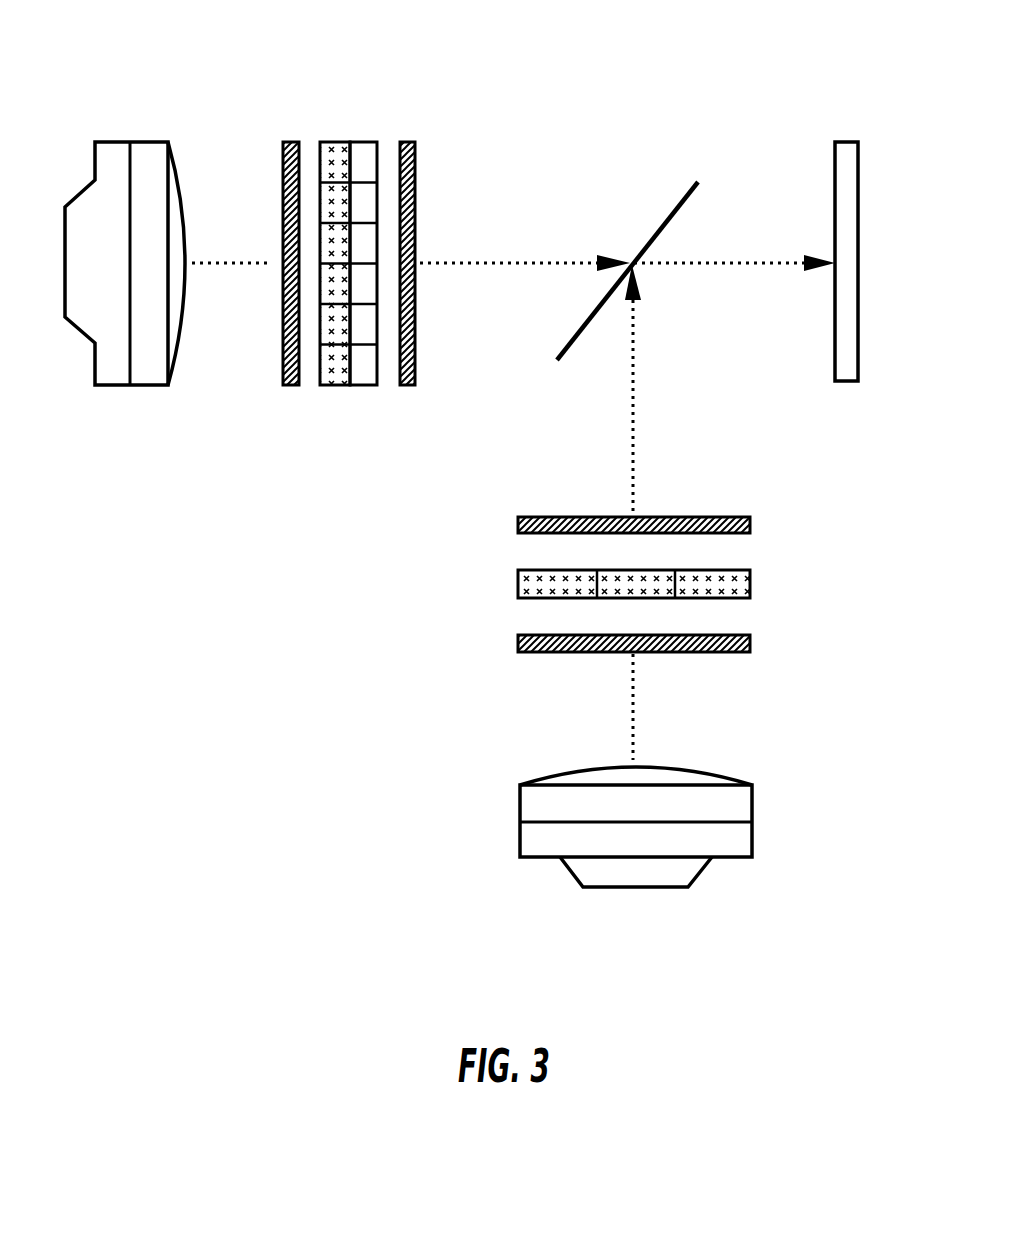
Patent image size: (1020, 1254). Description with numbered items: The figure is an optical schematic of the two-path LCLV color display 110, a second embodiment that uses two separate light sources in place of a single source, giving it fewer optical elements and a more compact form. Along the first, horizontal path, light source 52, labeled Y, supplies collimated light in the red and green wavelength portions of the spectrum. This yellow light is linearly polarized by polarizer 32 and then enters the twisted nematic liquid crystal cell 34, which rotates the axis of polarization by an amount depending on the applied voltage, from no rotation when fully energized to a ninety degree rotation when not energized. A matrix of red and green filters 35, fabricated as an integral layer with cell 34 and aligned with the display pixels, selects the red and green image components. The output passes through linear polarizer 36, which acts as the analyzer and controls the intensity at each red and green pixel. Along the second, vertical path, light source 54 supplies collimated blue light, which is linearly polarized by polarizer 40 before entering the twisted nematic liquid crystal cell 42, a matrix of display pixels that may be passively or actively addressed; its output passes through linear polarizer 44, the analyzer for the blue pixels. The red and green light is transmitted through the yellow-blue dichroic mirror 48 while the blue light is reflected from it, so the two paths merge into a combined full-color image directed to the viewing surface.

The two-path LCLV color display 110 is at (745, 72).
The light source 52 is at (141, 141).
The polarizer 32 is at (288, 141).
The twisted nematic liquid crystal cell 34 is at (334, 141).
The red and green filters 35 is at (358, 141).
The linear polarizer 36 is at (407, 141).
The yellow-blue dichroic mirror 48 is at (683, 198).
The linear polarizer 44 is at (752, 523).
The twisted nematic liquid crystal cell 42 is at (752, 584).
The polarizer 40 is at (752, 643).
The light source 54 is at (752, 810).